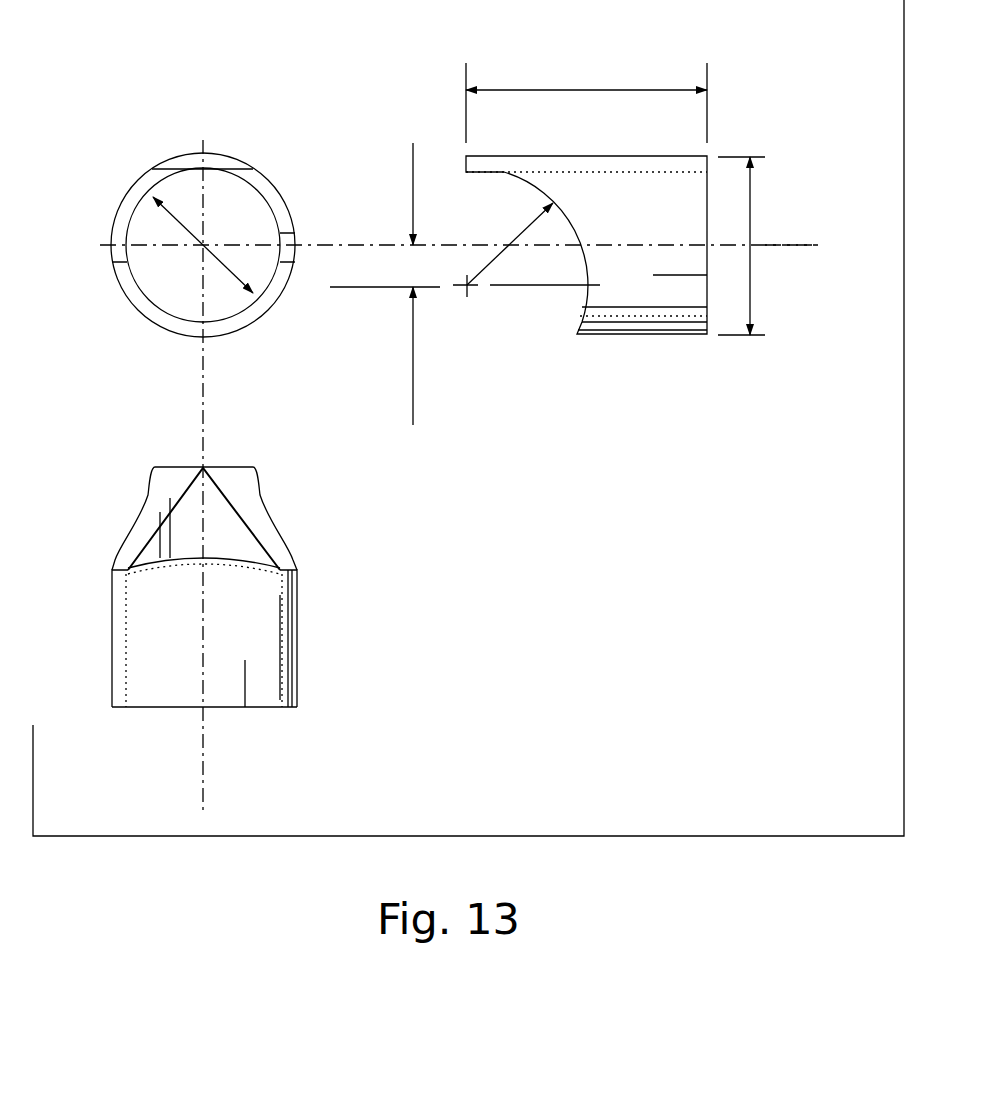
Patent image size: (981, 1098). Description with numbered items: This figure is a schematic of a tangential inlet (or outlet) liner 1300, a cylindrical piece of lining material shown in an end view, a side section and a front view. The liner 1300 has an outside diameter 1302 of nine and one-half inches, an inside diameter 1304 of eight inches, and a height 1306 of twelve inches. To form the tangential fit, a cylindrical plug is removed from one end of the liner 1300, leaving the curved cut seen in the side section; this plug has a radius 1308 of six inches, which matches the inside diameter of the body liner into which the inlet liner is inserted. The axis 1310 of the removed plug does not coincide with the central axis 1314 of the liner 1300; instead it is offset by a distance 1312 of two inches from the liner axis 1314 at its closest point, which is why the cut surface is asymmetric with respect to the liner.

The tangential inlet liner 1300 is at (470, 513).
The outside diameter 1302 is at (752, 288).
The inside diameter 1304 is at (180, 224).
The height 1306 is at (590, 90).
The radius 1308 is at (467, 284).
The axis of the cylindrical plug 1310 is at (467, 286).
The distance 1312 is at (416, 303).
The axis of the tangential inlet liner 1314 is at (800, 245).